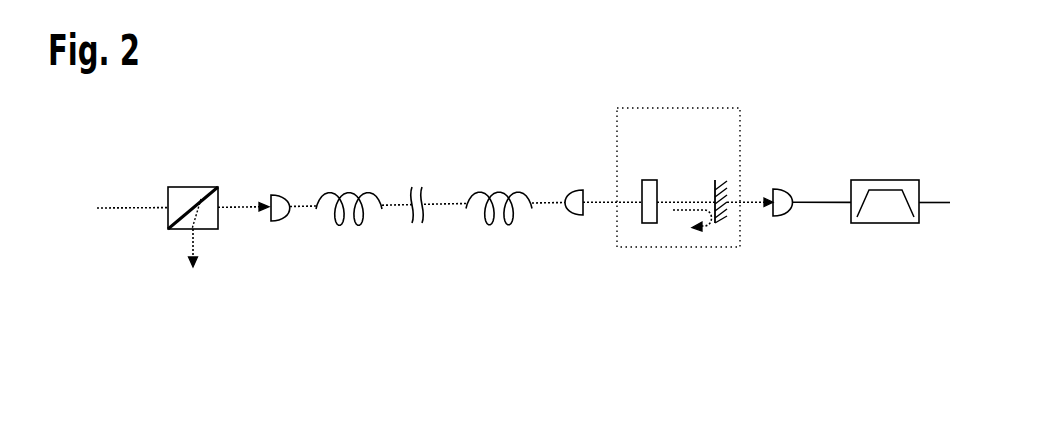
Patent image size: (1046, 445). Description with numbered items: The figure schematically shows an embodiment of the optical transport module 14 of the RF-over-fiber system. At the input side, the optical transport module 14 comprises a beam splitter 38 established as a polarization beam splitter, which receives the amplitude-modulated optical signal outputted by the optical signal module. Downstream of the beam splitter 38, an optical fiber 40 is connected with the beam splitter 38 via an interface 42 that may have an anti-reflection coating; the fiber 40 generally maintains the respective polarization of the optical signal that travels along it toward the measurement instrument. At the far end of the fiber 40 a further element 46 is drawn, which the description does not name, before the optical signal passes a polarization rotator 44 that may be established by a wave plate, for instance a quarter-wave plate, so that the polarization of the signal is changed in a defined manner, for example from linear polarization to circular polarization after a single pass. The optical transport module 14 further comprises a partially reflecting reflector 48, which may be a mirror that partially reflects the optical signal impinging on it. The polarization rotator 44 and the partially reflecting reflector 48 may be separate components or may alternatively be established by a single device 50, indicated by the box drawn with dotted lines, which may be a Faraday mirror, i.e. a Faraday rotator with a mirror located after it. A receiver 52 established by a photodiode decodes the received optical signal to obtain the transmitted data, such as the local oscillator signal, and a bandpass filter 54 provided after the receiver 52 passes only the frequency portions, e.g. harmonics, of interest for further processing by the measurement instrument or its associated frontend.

The optical transport module 14 is at (497, 139).
The beam splitter 38 is at (193, 187).
The optical fiber 40 is at (303, 205).
The interface 42 is at (282, 222).
The polarization rotator 44 is at (649, 180).
The collimating lens 46 is at (577, 190).
The partially reflecting reflector 48 is at (716, 182).
The single device 50 is at (676, 108).
The receiver 52 is at (778, 189).
The filter 54 is at (884, 180).